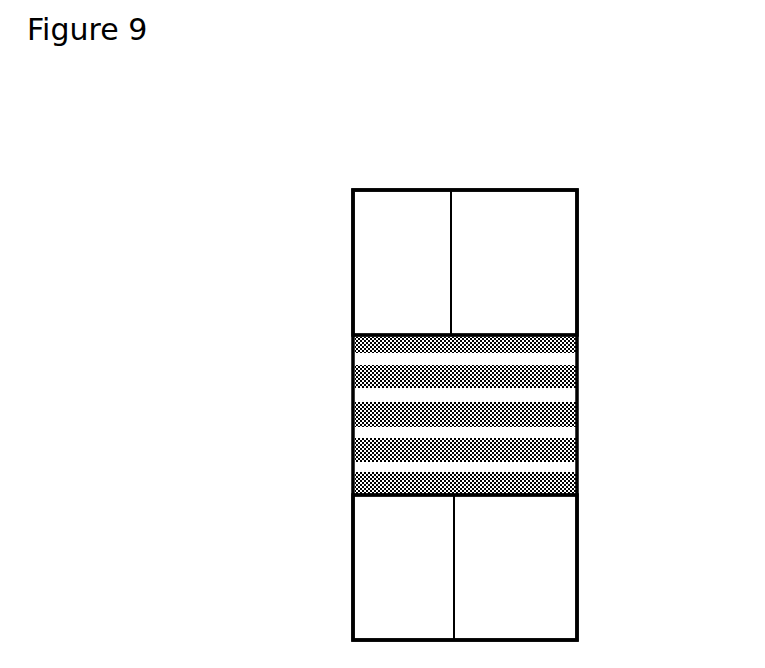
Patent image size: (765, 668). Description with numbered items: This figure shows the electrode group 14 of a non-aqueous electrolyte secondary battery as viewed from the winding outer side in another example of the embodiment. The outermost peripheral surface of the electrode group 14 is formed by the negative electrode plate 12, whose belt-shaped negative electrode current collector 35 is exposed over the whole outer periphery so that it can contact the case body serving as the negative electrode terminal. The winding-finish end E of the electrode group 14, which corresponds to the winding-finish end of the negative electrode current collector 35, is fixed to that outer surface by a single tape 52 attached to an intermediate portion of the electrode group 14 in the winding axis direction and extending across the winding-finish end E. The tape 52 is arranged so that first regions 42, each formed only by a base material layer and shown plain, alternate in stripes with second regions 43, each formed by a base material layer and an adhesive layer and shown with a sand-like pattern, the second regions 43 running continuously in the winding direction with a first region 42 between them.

The electrode group 14 is at (579, 266).
The tape 52 is at (508, 385).
The second region 43 is at (500, 334).
The first region 42 is at (580, 418).
The negative electrode plate 12 is at (567, 531).
The negative electrode current collector 35 is at (567, 568).
The winding-finish end E is at (453, 557).